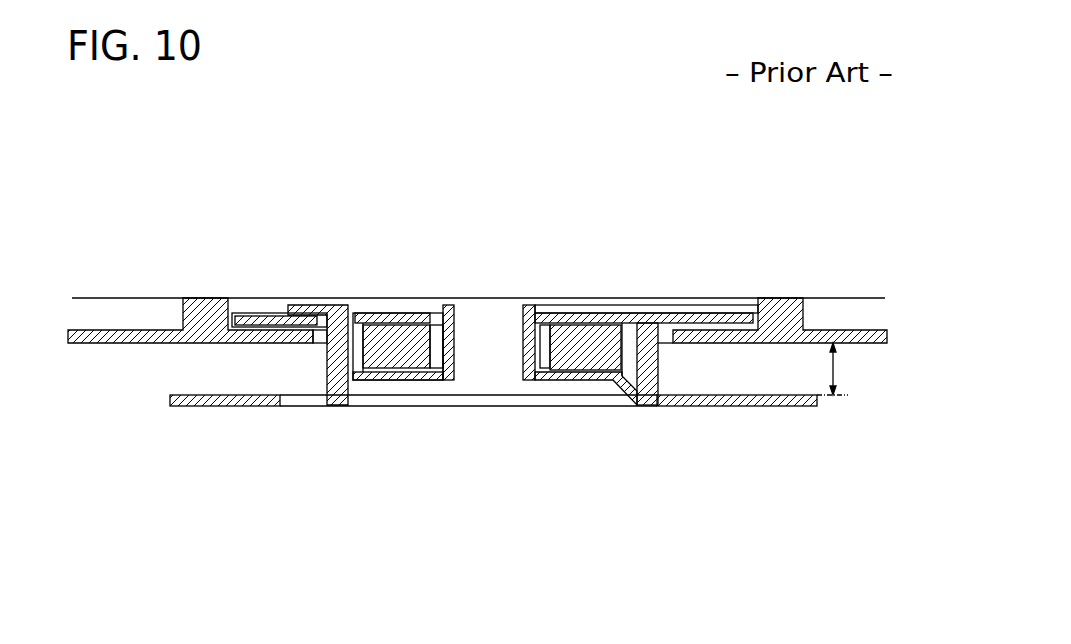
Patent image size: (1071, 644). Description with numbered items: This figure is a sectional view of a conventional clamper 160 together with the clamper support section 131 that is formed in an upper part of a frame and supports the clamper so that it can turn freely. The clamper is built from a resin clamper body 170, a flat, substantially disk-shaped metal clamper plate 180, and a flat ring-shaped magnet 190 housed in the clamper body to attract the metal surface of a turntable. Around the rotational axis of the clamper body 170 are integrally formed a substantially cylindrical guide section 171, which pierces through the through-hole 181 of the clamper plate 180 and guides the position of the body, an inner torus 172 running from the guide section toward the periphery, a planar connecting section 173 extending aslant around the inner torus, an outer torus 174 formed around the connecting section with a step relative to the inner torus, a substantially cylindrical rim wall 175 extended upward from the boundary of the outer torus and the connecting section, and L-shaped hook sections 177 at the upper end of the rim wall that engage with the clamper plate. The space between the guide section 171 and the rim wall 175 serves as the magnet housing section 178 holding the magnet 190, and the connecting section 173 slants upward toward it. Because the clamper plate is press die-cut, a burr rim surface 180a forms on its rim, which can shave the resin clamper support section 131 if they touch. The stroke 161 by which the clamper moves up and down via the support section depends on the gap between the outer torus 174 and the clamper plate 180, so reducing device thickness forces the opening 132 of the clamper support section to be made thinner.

The clamper support section 131 is at (205, 300).
The opening 132 is at (317, 370).
The clamper 160 is at (634, 303).
The stroke 161 is at (835, 368).
The clamper body 170 is at (398, 380).
The guide section 171 is at (523, 347).
The inner torus 172 is at (547, 372).
The connecting section 173 is at (620, 387).
The outer torus 174 is at (725, 402).
The rim wall 175 is at (656, 375).
The L-shaped hook section 177 is at (296, 313).
The magnet housing section 178 is at (440, 352).
The clamper plate 180 is at (677, 315).
The burr rim surface 180a is at (748, 312).
The through-hole 181 is at (456, 318).
The magnet 190 is at (400, 343).